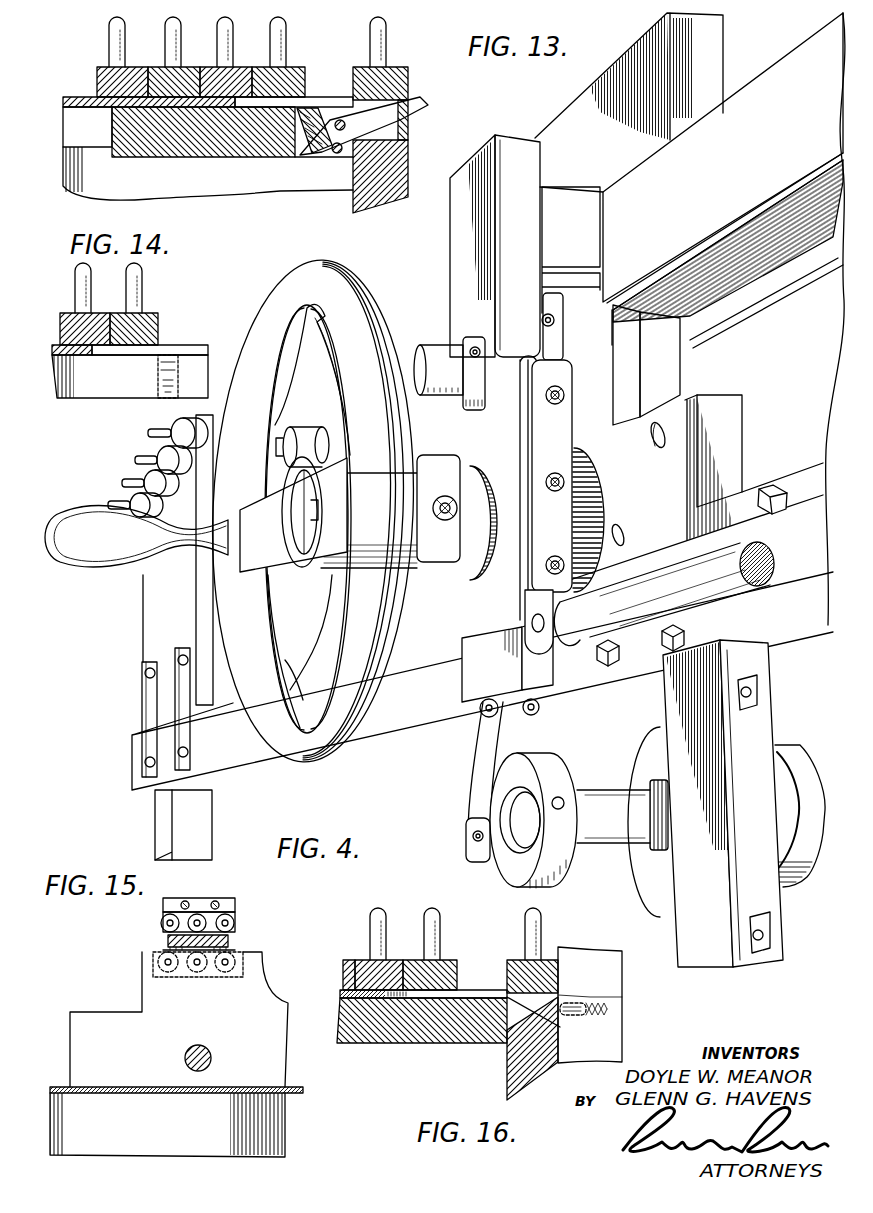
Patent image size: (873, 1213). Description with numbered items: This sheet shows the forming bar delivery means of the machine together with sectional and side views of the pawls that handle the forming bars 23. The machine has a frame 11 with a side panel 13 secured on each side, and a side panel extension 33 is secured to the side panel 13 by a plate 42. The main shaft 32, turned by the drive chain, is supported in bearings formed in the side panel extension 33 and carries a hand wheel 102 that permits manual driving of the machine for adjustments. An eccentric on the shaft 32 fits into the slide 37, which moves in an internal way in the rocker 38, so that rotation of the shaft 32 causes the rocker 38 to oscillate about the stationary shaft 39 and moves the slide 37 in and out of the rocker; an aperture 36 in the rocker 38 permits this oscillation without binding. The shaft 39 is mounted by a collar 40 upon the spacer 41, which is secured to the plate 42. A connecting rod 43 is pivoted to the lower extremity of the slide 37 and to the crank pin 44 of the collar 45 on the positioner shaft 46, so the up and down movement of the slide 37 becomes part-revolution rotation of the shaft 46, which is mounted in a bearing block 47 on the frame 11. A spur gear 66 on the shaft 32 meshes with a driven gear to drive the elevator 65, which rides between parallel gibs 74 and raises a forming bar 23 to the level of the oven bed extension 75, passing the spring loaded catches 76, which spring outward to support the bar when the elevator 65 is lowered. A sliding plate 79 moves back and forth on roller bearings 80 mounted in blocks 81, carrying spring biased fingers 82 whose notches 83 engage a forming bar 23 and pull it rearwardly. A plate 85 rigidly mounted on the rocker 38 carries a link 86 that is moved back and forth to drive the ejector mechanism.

In FIG. 4, the frame 11 is at (784, 972).
In FIG. 4, the side panel 13 is at (692, 319).
In FIG. 13, the forming bar 23 is at (300, 77).
In FIG. 14, the forming bar 23 is at (160, 329).
In FIG. 16, the forming bar 23 is at (507, 963).
In FIG. 15, the main shaft 32 is at (208, 1054).
In FIG. 4, the main shaft 32 is at (478, 507).
In FIG. 4, the side panel extension 33 is at (585, 111).
In FIG. 4, the aperture 36 is at (483, 561).
In FIG. 4, the slide 37 is at (480, 671).
In FIG. 4, the rocker 38 is at (467, 243).
In FIG. 4, the shaft 39 is at (435, 353).
In FIG. 4, the collar 40 is at (460, 337).
In FIG. 4, the spacer 41 is at (602, 369).
In FIG. 4, the plate 42 is at (708, 406).
In FIG. 4, the connecting rod 43 is at (490, 769).
In FIG. 4, the crank pin 44 is at (466, 837).
In FIG. 4, the collar 45 is at (557, 768).
In FIG. 4, the positioner shaft 46 is at (612, 822).
In FIG. 4, the bearing block 47 is at (658, 881).
In FIG. 13, the elevator 65 is at (362, 197).
In FIG. 16, the elevator 65 is at (507, 1071).
In FIG. 4, the spur gear 66 is at (600, 501).
In FIG. 16, the gib 74 is at (612, 1032).
In FIG. 13, the oven bed extension 75 is at (96, 101).
In FIG. 14, the oven bed extension 75 is at (88, 354).
In FIG. 15, the spring loaded catch 76 is at (112, 1087).
In FIG. 16, the spring loaded catch 76 is at (560, 997).
In FIG. 13, the sliding plate 79 is at (268, 142).
In FIG. 14, the sliding plate 79 is at (120, 388).
In FIG. 15, the sliding plate 79 is at (275, 1135).
In FIG. 16, the sliding plate 79 is at (422, 1026).
In FIG. 15, the roller bearing 80 is at (240, 951).
In FIG. 15, the block 81 is at (228, 904).
In FIG. 13, the spring biased finger 82 is at (410, 108).
In FIG. 13, the notch 83 is at (414, 92).
In FIG. 4, the plate 85 is at (552, 439).
In FIG. 4, the link 86 is at (714, 572).
In FIG. 4, the hand wheel 102 is at (315, 728).